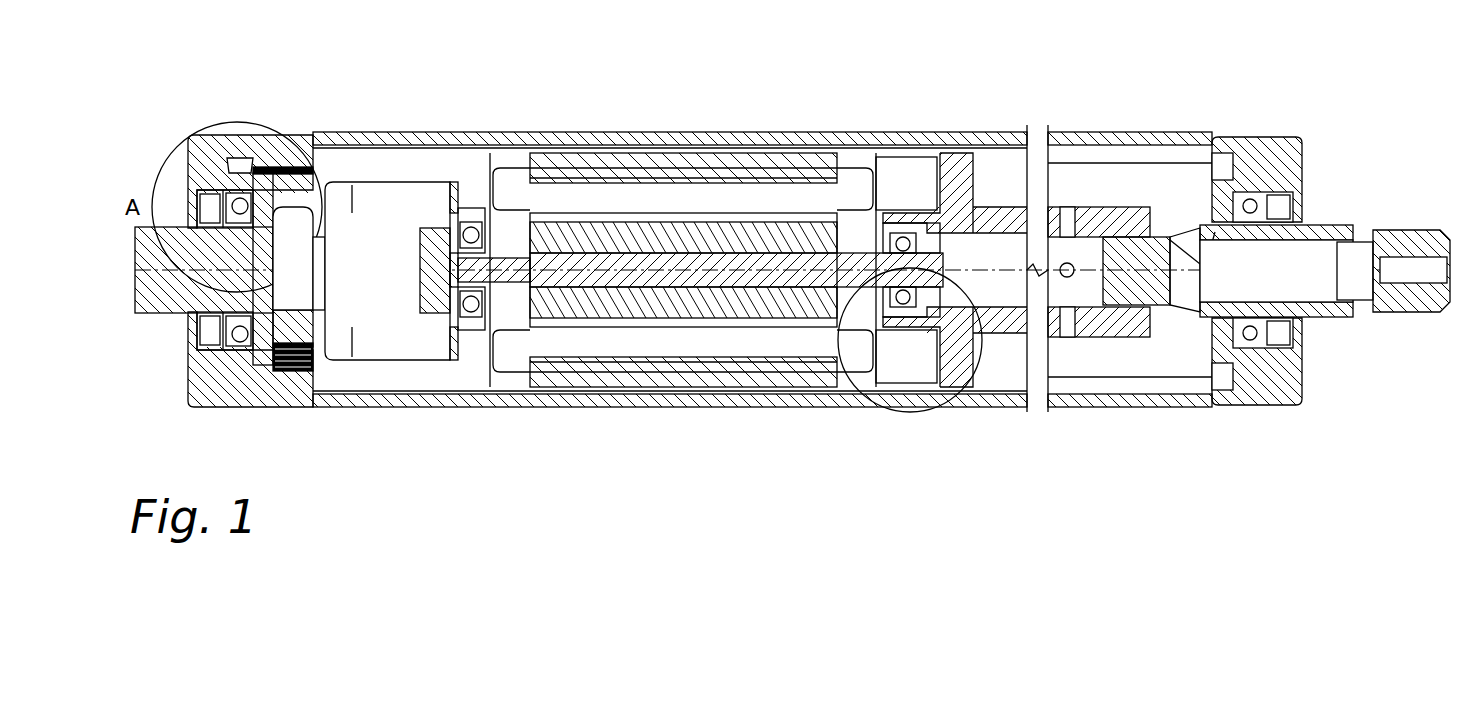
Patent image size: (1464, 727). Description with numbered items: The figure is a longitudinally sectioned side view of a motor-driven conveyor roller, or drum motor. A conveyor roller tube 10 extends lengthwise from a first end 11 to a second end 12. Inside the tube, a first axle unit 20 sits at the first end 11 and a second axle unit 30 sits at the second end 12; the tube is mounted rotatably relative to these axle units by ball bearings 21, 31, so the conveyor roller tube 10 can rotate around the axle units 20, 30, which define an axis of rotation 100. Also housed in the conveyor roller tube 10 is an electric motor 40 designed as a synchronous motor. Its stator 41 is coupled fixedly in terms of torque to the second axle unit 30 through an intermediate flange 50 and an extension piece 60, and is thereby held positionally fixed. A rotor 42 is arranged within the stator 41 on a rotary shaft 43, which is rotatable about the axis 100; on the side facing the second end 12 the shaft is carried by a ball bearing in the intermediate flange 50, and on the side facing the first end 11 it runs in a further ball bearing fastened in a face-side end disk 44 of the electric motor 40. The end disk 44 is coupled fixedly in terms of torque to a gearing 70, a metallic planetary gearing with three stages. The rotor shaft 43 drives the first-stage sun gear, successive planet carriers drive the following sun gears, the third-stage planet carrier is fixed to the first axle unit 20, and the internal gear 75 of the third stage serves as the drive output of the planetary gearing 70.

The conveyor roller tube 10 is at (728, 137).
The first end 11 is at (170, 124).
The second end 12 is at (1322, 143).
The first axle unit 20 is at (178, 293).
The ball bearing 21 is at (238, 342).
The second axle unit 30 is at (1402, 242).
The ball bearing 31 is at (1250, 332).
The electric motor 40 is at (700, 336).
The stator 41 is at (757, 370).
The rotor 42 is at (730, 300).
The rotary shaft 43 is at (683, 270).
The face-side end disk 44 is at (456, 207).
The intermediate flange 50 is at (953, 180).
The extension piece 60 is at (1117, 223).
The gearing 70 is at (383, 327).
The internal gear 75 is at (292, 163).
The axis of rotation 100 is at (1410, 284).